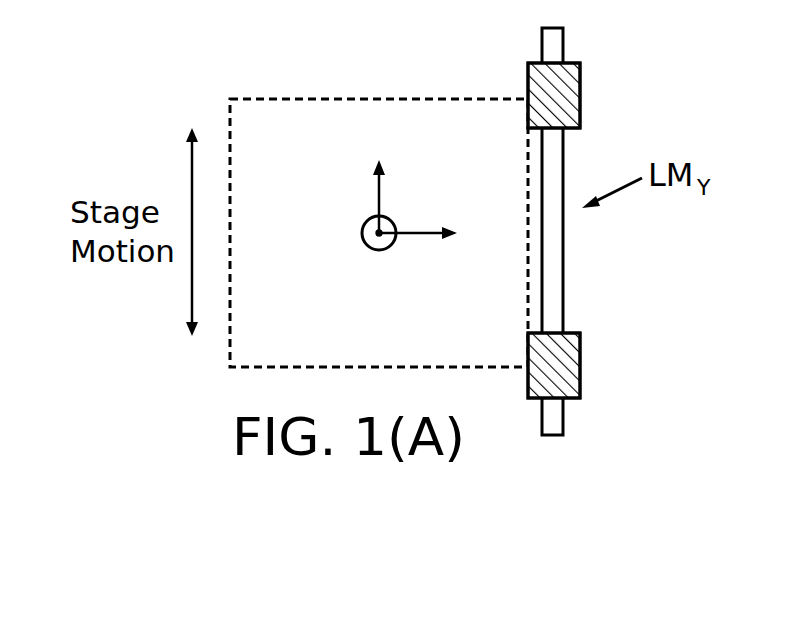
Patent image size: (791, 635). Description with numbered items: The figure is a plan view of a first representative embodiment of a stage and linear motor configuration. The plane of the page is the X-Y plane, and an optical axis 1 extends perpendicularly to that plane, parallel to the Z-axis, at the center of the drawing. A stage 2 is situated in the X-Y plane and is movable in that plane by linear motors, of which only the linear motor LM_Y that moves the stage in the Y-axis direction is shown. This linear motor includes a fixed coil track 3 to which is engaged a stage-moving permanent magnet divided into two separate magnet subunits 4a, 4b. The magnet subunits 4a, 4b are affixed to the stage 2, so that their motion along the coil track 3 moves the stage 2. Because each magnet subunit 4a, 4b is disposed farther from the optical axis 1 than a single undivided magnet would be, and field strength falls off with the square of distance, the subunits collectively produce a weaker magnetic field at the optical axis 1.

The optical axis 1 is at (379, 233).
The stage 2 is at (355, 99).
The coil track 3 is at (553, 47).
The magnet subunit 4a is at (580, 105).
The magnet subunit 4b is at (580, 372).